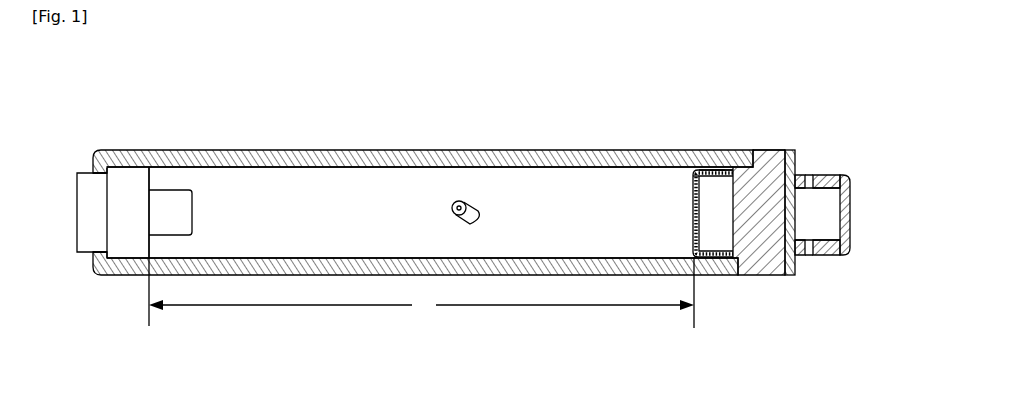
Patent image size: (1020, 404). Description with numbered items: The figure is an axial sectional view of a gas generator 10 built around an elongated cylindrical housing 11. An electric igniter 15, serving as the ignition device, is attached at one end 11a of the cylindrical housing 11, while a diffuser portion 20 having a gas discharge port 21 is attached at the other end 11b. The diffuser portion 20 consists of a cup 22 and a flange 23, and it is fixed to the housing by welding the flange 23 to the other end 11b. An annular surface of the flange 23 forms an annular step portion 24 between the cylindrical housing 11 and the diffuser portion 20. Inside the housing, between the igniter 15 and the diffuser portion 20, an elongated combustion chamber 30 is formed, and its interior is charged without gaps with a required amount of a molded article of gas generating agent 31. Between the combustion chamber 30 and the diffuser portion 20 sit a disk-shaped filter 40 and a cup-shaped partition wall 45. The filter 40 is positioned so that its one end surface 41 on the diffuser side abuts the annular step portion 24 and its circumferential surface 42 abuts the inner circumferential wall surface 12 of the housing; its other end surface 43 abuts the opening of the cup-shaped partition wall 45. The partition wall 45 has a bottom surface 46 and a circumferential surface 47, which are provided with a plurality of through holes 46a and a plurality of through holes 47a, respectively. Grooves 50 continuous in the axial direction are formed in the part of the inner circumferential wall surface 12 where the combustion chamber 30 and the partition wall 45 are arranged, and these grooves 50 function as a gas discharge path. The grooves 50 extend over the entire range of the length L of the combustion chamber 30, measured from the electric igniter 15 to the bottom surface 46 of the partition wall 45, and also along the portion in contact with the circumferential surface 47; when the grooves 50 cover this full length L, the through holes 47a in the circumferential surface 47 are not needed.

The gas generator 10 is at (461, 143).
The cylindrical housing 11 is at (537, 150).
The one end of cylindrical housing 11a is at (96, 275).
The other end of cylindrical housing 11b is at (789, 276).
The inner circumferential wall surface 12 is at (257, 167).
The electric igniter 15 is at (98, 219).
The diffuser portion 20 is at (858, 196).
The gas discharge port 21 is at (818, 176).
The cup 22 is at (841, 176).
The flange 23 is at (798, 262).
The annular step portion 24 is at (770, 165).
The combustion chamber 30 is at (357, 218).
The gas generating agent 31 is at (460, 228).
The filter 40 is at (756, 252).
The one end surface of filter 41 is at (788, 213).
The circumferential surface of filter 42 is at (757, 153).
The other end surface of filter 43 is at (732, 227).
The cup-shaped partition wall 45 is at (686, 207).
The bottom surface of partition wall 46 is at (693, 238).
The through holes of bottom surface 46a is at (693, 178).
The circumferential surface of partition wall 47 is at (702, 167).
The through holes of circumferential surface 47a is at (717, 168).
The grooves 50 is at (278, 258).
The length of combustion chamber L is at (421, 247).